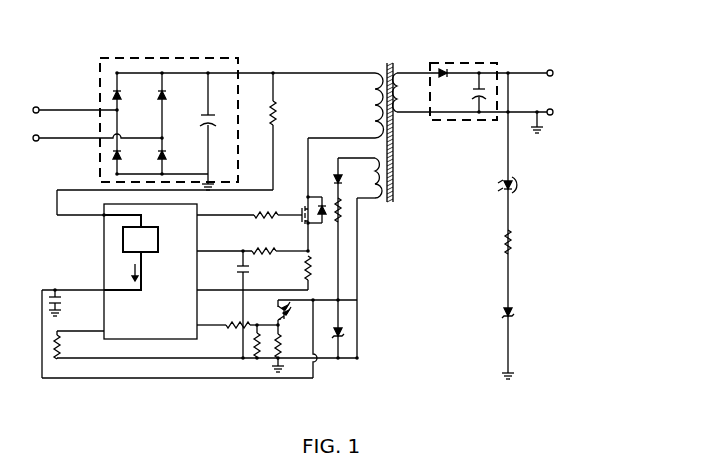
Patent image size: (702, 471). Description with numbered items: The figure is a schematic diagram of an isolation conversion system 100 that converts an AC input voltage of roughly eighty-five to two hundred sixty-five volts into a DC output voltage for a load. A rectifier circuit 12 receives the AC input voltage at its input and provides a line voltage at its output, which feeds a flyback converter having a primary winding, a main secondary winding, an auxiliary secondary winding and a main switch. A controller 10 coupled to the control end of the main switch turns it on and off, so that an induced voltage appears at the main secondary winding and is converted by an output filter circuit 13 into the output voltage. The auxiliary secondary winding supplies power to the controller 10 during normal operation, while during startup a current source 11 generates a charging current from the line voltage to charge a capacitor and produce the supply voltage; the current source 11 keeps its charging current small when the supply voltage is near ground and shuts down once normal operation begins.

The isolation conversion system 100 is at (598, 56).
The rectifier circuit 12 is at (238, 58).
The output filter circuit 13 is at (497, 63).
The controller 10 is at (143, 271).
The current source 11 is at (154, 253).